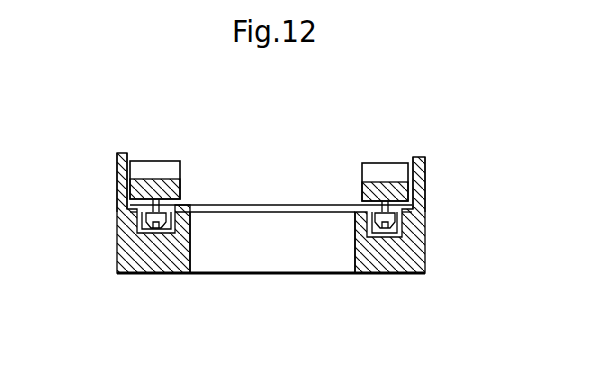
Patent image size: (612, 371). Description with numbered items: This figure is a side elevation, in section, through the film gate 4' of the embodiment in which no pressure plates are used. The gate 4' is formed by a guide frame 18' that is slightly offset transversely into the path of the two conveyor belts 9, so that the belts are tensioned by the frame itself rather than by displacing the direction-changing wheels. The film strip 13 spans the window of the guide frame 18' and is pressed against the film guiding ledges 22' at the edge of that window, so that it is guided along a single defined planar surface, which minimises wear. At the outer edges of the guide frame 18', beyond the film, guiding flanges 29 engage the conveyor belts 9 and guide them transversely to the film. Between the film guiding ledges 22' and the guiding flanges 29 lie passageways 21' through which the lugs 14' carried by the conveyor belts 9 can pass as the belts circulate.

The gate 4' is at (244, 283).
The conveyor belts 9 is at (182, 180).
The film strip 13 is at (258, 205).
The lugs 14' is at (275, 229).
The guide frame 18' is at (269, 241).
The passageways 21' is at (269, 270).
The film guiding ledges 22' is at (272, 262).
The guiding flanges 29 is at (122, 178).